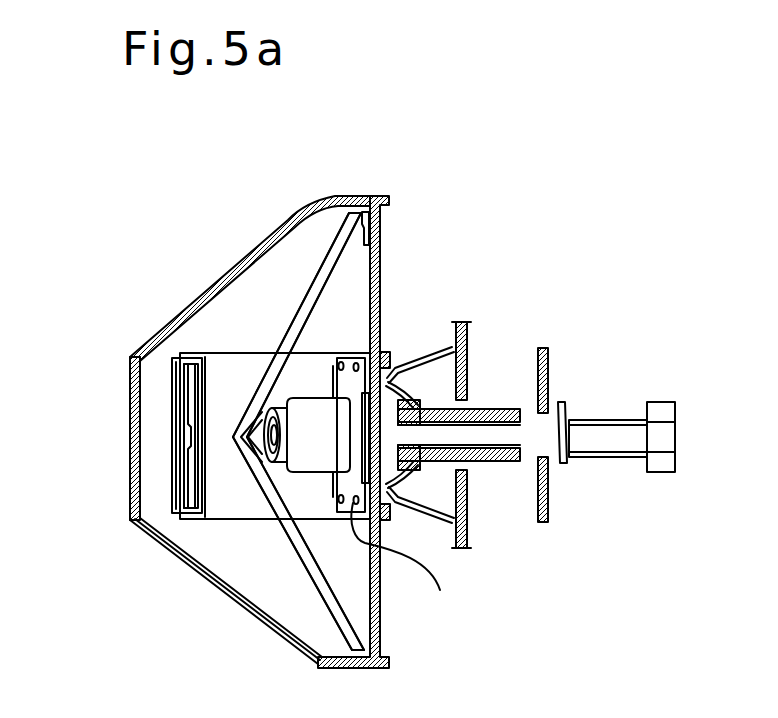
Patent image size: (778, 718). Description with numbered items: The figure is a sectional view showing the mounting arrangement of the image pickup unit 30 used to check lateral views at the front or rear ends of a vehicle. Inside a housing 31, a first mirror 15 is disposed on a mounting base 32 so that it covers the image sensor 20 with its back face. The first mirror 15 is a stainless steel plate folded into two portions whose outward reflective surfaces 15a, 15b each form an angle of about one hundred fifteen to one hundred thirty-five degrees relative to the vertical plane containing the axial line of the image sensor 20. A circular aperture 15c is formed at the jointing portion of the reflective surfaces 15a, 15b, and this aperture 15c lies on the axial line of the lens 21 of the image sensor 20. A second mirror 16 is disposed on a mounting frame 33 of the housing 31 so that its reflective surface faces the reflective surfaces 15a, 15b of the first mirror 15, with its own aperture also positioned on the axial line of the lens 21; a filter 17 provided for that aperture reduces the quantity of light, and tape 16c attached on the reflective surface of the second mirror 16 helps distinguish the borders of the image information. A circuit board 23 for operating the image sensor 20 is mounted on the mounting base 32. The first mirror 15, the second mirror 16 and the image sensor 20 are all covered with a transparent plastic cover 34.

The image pickup unit 30 is at (142, 265).
The housing 31 is at (147, 327).
The mounting base 32 is at (377, 252).
The mounting frame 33 is at (242, 500).
The transparent plastic cover 34 is at (167, 558).
The first mirror 15 is at (295, 312).
The reflective surface 15a is at (322, 262).
The reflective surface 15b is at (308, 572).
The circular aperture 15c is at (252, 408).
The second mirror 16 is at (175, 483).
The tape 16c is at (193, 436).
The filter 17 is at (175, 383).
The image sensor 20 is at (314, 388).
The lens 21 is at (334, 435).
The circuit board 23 is at (404, 561).